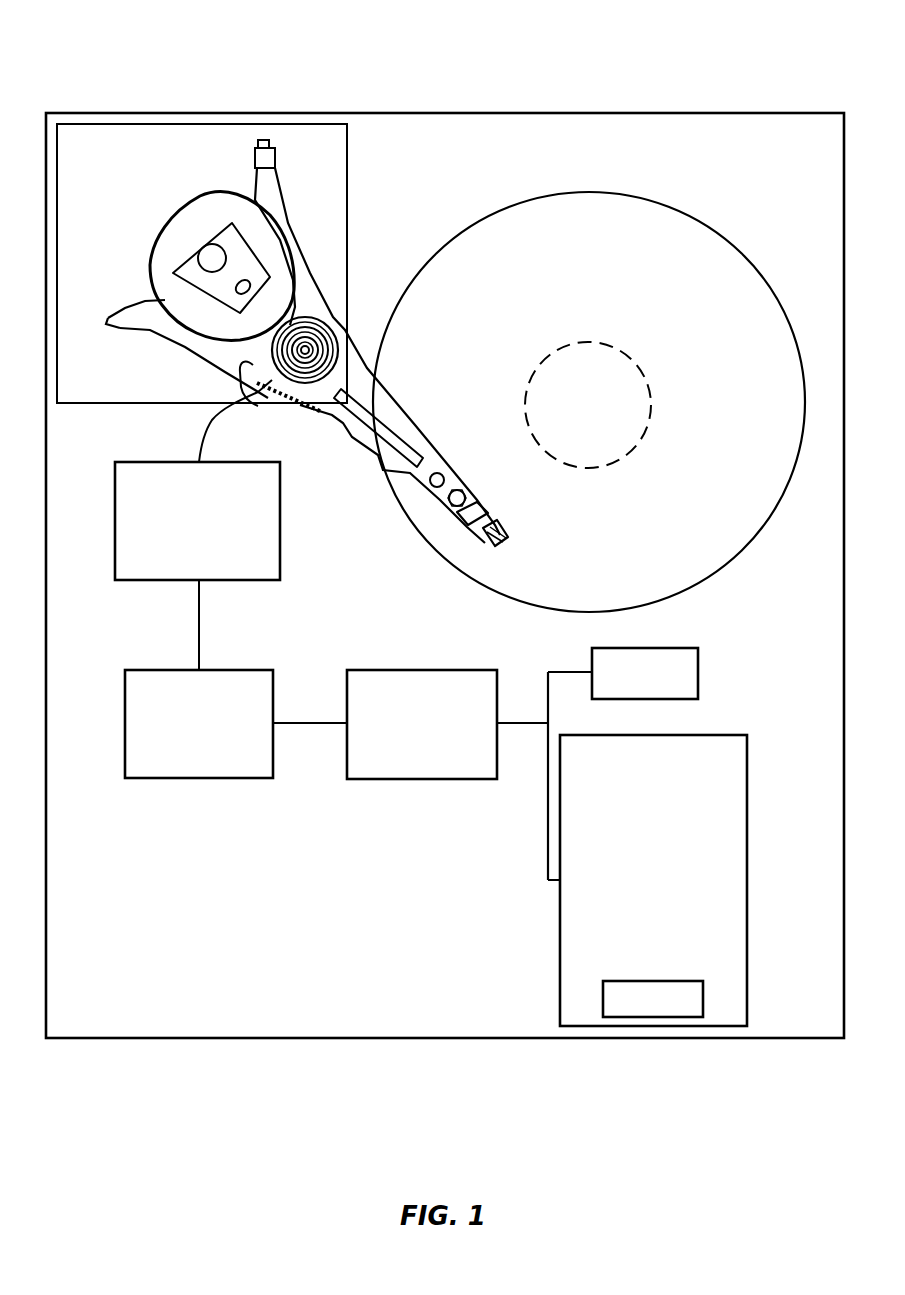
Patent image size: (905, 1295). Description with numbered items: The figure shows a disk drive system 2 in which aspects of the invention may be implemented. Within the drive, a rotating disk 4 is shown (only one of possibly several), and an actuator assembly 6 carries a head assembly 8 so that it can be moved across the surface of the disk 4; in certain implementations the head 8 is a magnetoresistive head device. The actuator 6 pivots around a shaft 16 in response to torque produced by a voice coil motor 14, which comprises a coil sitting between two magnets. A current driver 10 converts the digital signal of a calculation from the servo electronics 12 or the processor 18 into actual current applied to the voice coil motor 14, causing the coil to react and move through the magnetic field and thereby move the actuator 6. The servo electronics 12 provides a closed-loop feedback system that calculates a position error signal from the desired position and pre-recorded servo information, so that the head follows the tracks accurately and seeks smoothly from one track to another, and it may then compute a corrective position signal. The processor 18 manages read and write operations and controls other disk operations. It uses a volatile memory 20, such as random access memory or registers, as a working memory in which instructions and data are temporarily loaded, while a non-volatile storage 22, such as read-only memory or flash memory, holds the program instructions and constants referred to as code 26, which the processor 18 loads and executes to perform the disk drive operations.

The disk drive system 2 is at (652, 113).
The rotating disk 4 is at (706, 224).
The actuator assembly 6 is at (378, 390).
The head assembly 8 is at (493, 543).
The current driver 10 is at (280, 515).
The servo electronics 12 is at (273, 697).
The voice coil motor 14 is at (162, 244).
The shaft 16 is at (327, 325).
The processor 18 is at (465, 670).
The volatile memory 20 is at (698, 672).
The non-volatile storage 22 is at (747, 777).
The code 26 is at (703, 1000).